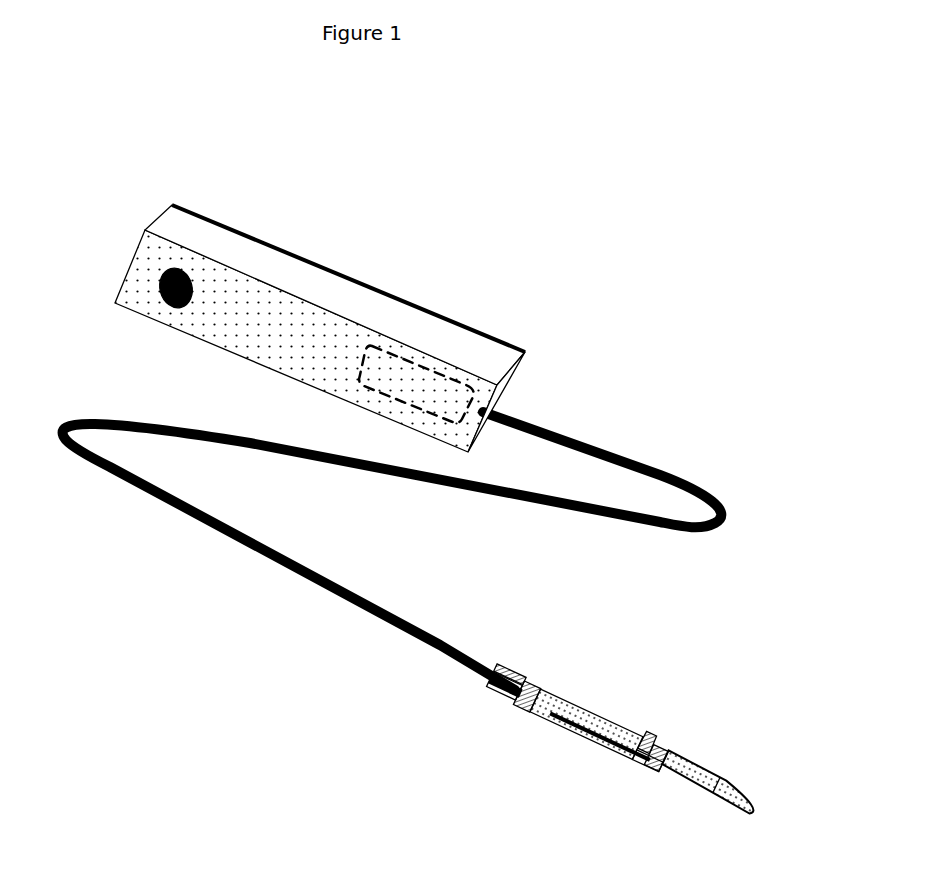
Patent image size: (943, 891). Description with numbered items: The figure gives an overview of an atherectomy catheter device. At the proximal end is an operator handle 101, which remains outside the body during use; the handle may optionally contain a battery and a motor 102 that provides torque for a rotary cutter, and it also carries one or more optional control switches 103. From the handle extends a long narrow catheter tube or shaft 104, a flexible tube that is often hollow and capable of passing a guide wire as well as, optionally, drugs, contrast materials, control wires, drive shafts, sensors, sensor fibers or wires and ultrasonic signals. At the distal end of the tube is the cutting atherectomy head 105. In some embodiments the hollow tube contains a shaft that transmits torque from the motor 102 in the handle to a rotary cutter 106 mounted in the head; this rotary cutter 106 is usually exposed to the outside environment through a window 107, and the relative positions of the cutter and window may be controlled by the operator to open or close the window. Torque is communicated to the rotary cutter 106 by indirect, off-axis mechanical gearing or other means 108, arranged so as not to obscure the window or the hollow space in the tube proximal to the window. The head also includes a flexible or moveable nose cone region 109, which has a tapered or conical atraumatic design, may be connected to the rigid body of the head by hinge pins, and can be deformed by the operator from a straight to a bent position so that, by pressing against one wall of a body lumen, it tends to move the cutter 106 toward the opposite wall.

The operator handle 101 is at (340, 267).
The motor 102 is at (418, 380).
The control switches 103 is at (150, 282).
The catheter tube (shaft) 104 is at (737, 513).
The cutting atherectomy head 105 is at (632, 722).
The rotary cutter 106 is at (673, 732).
The window 107 is at (650, 732).
The indirect off-axis mechanical gearing 108 is at (548, 732).
The nose cone region 109 is at (758, 790).